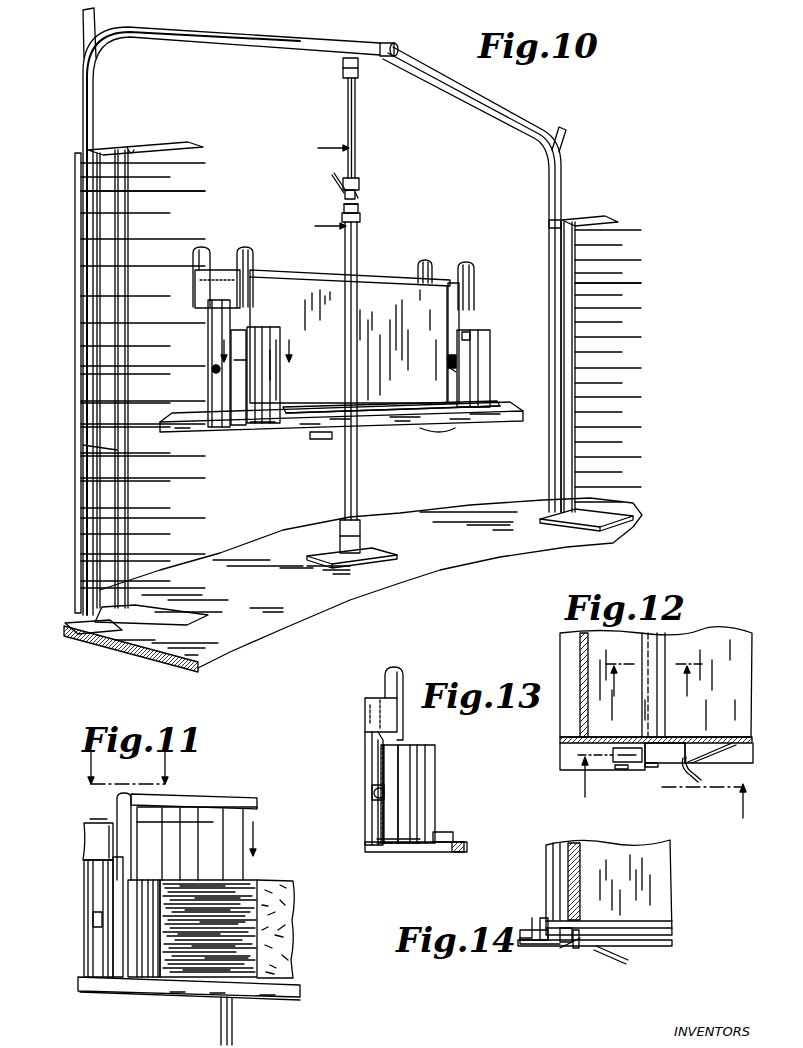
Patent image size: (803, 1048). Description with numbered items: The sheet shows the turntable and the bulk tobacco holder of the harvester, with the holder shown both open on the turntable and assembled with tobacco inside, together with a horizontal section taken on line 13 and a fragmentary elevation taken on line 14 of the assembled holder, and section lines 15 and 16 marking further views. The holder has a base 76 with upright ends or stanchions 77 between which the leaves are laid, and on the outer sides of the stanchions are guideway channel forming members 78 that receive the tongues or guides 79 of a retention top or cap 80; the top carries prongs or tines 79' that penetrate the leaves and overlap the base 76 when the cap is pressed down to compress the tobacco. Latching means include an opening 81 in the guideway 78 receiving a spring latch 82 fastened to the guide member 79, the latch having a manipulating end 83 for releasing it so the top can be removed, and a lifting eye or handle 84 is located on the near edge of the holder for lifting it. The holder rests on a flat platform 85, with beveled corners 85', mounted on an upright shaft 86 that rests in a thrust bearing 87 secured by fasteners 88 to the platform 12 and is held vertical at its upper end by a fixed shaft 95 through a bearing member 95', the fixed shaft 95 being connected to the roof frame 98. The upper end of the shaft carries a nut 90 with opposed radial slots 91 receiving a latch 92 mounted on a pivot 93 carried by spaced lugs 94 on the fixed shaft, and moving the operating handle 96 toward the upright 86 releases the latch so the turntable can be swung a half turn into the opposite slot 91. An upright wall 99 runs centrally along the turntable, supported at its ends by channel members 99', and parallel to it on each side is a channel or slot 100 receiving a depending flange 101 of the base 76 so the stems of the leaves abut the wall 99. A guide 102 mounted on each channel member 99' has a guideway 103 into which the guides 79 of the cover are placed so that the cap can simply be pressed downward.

In FIG. 10, the platform 12 is at (284, 595).
In FIG. 13, the platform 12 is at (381, 715).
In FIG. 12, the section line 13— 13 is at (652, 787).
In FIG. 11, the section line 14— 14 is at (127, 768).
In FIG. 12, the section line 15 is at (653, 680).
In FIG. 10, the section line 16 is at (326, 188).
In FIG. 10, the base 76 is at (389, 418).
In FIG. 11, the base 76 is at (168, 979).
In FIG. 12, the base 76 is at (666, 651).
In FIG. 13, the base 76 is at (447, 834).
In FIG. 10, the upright ends or stanchions 77 is at (293, 334).
In FIG. 11, the upright ends or stanchions 77 is at (138, 978).
In FIG. 12, the upright ends or stanchions 77 is at (698, 738).
In FIG. 13, the upright ends or stanchions 77 is at (436, 764).
In FIG. 10, the guideway channel forming members 78 is at (247, 327).
In FIG. 11, the guideway channel forming members 78 is at (93, 906).
In FIG. 12, the guideway channel forming members 78 is at (652, 765).
In FIG. 13, the guideway channel forming members 78 is at (404, 751).
In FIG. 10, the tongues or guides 79 is at (353, 171).
In FIG. 11, the tongues or guides 79 is at (98, 839).
In FIG. 14, the tongues or guides 79 is at (531, 957).
In FIG. 10, the prongs or tines 79' is at (388, 233).
In FIG. 10, the retention top or cap 80 is at (75, 228).
In FIG. 11, the retention top or cap 80 is at (235, 798).
In FIG. 14, the retention top or cap 80 is at (560, 850).
In FIG. 10, the opening 81 is at (467, 333).
In FIG. 10, the spring latch 82 is at (549, 223).
In FIG. 14, the spring latch 82 is at (574, 922).
In FIG. 14, the manipulating end or portion 83 is at (566, 946).
In FIG. 10, the lifting eye or handle 84 is at (214, 374).
In FIG. 12, the lifting eye or handle 84 is at (624, 748).
In FIG. 13, the lifting eye or handle 84 is at (372, 793).
In FIG. 14, the lifting eye or handle 84 is at (533, 918).
In FIG. 10, the platform or turntable 85 is at (341, 427).
In FIG. 11, the platform or turntable 85 is at (189, 1011).
In FIG. 12, the platform or turntable 85 is at (656, 671).
In FIG. 13, the platform or turntable 85 is at (417, 858).
In FIG. 14, the platform or turntable 85 is at (628, 887).
In FIG. 10, the beveled corners 85' is at (307, 449).
In FIG. 10, the upright shaft 86 is at (358, 244).
In FIG. 10, the thrust bearing 87 is at (372, 550).
In FIG. 10, the fasteners 88 is at (318, 552).
In FIG. 10, the nut 90 is at (358, 207).
In FIG. 10, the radial slots 91 is at (360, 217).
In FIG. 10, the latch 92 is at (344, 208).
In FIG. 10, the pivot 93 is at (358, 195).
In FIG. 10, the spaced lugs 94 is at (344, 195).
In FIG. 10, the upper fixed shaft 95 is at (368, 118).
In FIG. 10, the bearing member 95' is at (374, 172).
In FIG. 10, the operating handle 96 is at (330, 176).
In FIG. 10, the roof frame 98 is at (304, 45).
In FIG. 10, the upright wall 99 is at (350, 328).
In FIG. 12, the upright wall 99 is at (556, 685).
In FIG. 10, the channel members 99' is at (362, 358).
In FIG. 11, the channel members 99' is at (78, 918).
In FIG. 12, the channel members 99' is at (602, 771).
In FIG. 13, the channel members 99' is at (357, 788).
In FIG. 14, the channel members 99' is at (582, 955).
In FIG. 12, the channel or slot 100 is at (644, 706).
In FIG. 13, the channel or slot 100 is at (390, 850).
In FIG. 12, the depending flange 101 is at (655, 707).
In FIG. 13, the depending flange 101 is at (385, 849).
In FIG. 10, the guide 102 is at (236, 252).
In FIG. 13, the guide 102 is at (407, 680).
In FIG. 14, the guide 102 is at (604, 947).
In FIG. 10, the guideway 103 is at (432, 266).
In FIG. 14, the guideway 103 is at (576, 950).